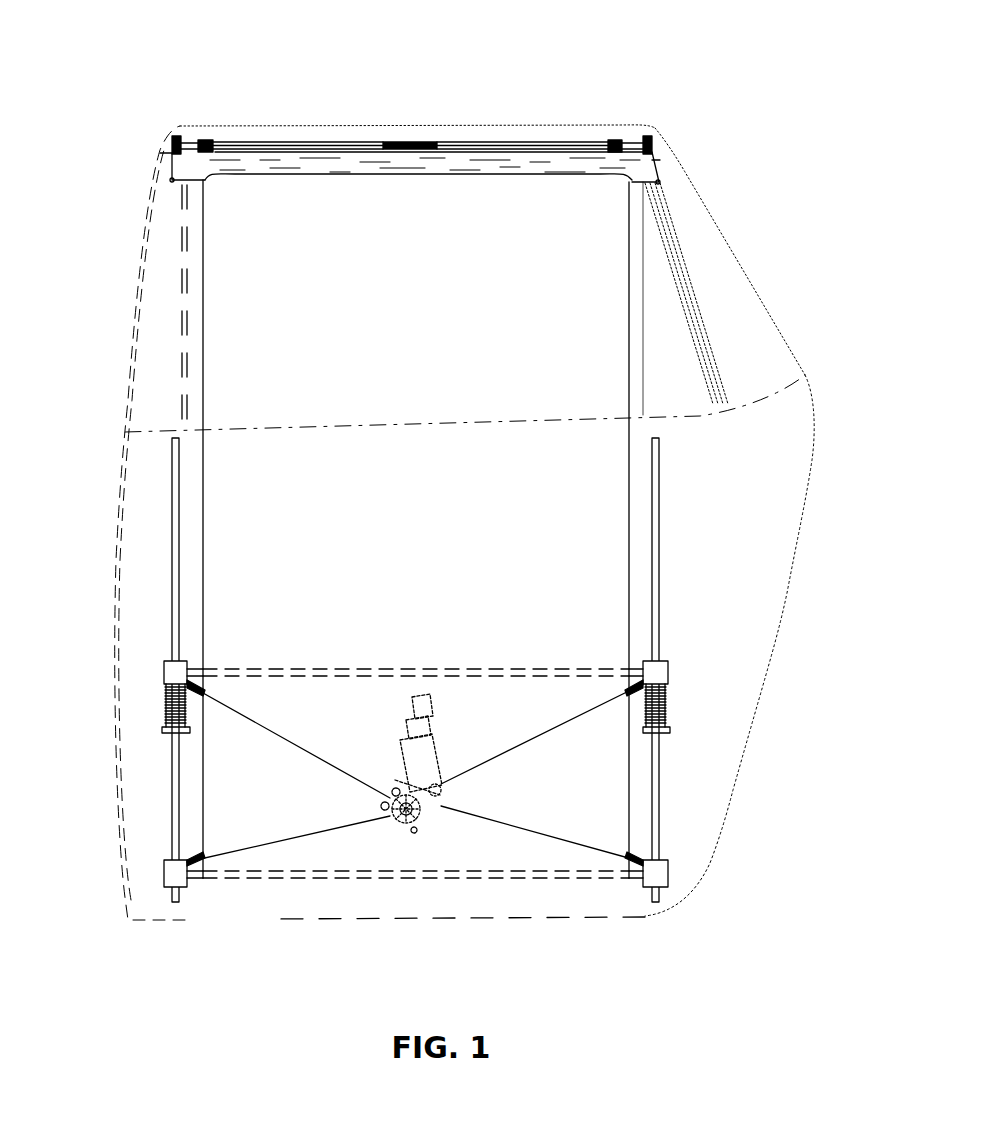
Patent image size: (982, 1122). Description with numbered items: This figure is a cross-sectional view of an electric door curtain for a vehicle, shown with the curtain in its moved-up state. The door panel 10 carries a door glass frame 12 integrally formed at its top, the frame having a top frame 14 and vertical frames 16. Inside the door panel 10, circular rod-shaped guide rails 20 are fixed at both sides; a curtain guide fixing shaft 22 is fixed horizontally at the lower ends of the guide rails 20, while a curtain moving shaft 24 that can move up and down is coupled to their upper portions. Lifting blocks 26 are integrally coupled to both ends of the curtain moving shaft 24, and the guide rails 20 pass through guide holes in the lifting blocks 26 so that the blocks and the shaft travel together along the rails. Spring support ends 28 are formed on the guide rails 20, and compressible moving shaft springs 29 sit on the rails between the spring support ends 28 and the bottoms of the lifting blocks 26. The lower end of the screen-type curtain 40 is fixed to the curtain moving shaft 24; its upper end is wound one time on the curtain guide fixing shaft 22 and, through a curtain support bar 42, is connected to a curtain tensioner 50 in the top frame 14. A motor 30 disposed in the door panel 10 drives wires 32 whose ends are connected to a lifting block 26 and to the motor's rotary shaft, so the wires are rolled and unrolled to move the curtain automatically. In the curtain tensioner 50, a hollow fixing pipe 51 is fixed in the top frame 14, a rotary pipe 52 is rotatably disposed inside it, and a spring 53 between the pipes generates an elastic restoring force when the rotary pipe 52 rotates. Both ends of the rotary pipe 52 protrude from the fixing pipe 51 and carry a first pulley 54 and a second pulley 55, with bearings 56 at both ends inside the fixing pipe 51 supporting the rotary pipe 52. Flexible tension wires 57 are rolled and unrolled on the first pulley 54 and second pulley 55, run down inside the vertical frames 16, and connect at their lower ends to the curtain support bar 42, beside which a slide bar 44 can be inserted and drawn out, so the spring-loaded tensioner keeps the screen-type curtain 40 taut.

The door panel 10 is at (750, 598).
The door glass frame 12 is at (772, 43).
The top frame 14 is at (622, 130).
The vertical frame 16 is at (690, 285).
The guide rail 20 is at (178, 800).
The curtain guide fixing shaft 22 is at (196, 887).
The curtain moving shaft 24 is at (197, 668).
The lifting block 26 is at (165, 672).
The spring support end 28 is at (670, 728).
The moving shaft spring 29 is at (662, 712).
The motor 30 is at (422, 793).
The wire 32 is at (592, 748).
The screen-type curtain 40 is at (215, 325).
The curtain support bar 42 is at (333, 178).
The slide bar 44 is at (650, 196).
The curtain tensioner 50 is at (426, 83).
The fixing pipe 51 is at (345, 140).
The rotary pipe 52 is at (505, 143).
The spring 53 is at (420, 140).
The first pulley 54 is at (178, 135).
The second pulley 55 is at (660, 138).
The bearing 56 is at (205, 140).
The tension wire 57 is at (170, 157).